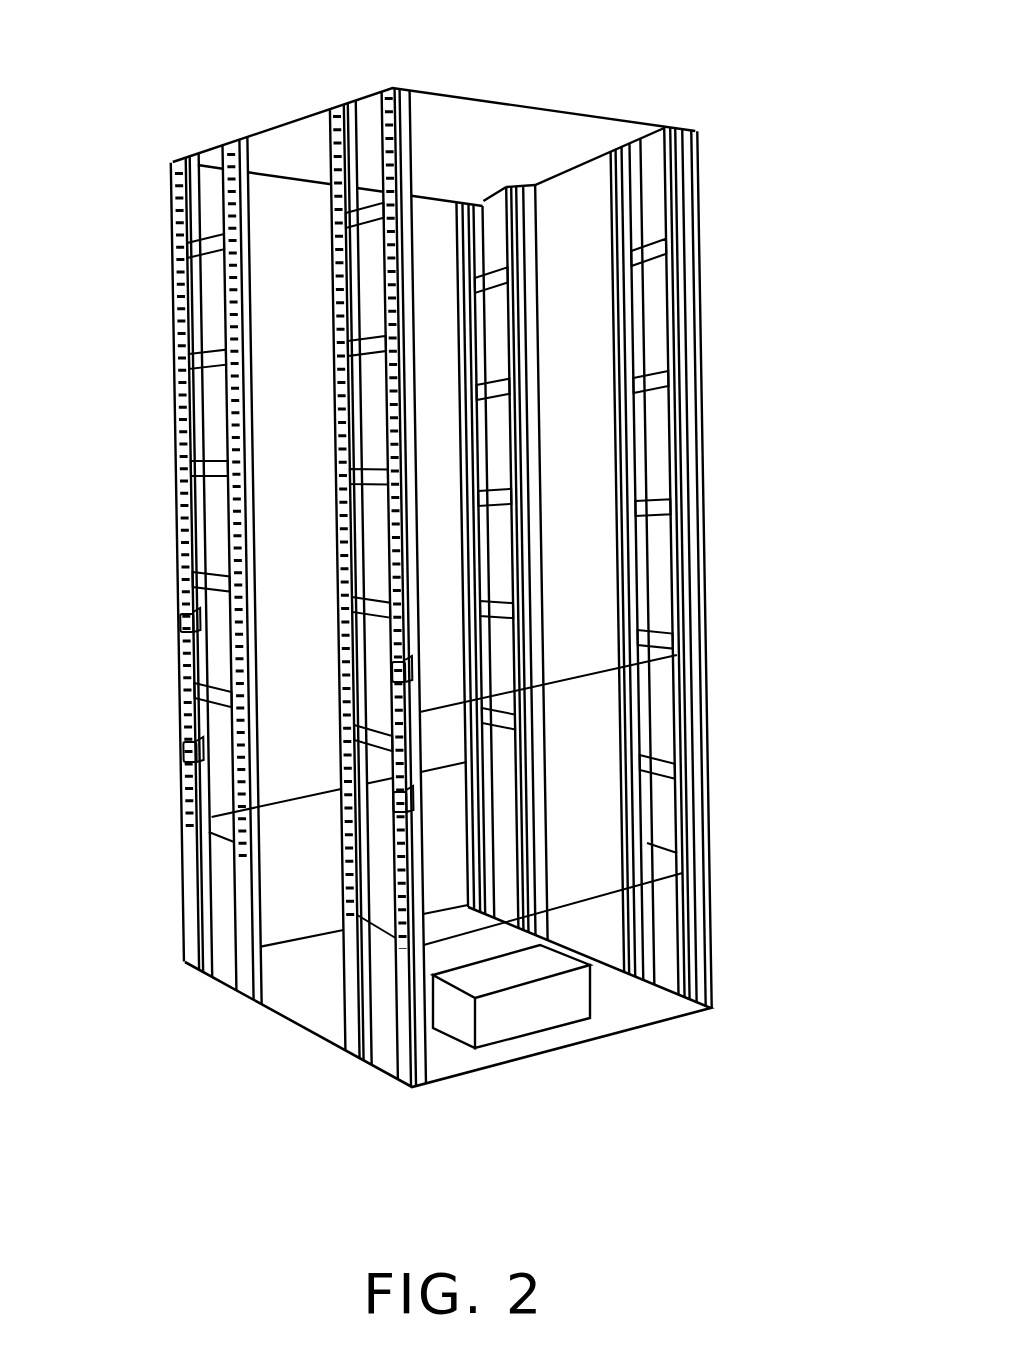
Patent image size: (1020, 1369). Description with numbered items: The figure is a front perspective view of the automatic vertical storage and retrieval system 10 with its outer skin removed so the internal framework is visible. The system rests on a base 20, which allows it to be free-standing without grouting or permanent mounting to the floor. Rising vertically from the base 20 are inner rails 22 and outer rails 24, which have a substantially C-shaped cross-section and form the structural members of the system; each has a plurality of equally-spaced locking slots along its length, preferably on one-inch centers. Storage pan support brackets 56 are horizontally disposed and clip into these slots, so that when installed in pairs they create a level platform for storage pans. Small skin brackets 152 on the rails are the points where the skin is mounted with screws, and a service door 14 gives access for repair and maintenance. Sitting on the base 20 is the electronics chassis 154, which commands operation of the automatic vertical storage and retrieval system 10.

The automatic vertical storage and retrieval system 10 is at (745, 178).
The service door 14 is at (275, 990).
The base 20 is at (665, 930).
The inner rails 22 is at (250, 157).
The outer rails 24 is at (176, 164).
The storage pan support brackets 56 is at (212, 455).
The skin brackets 152 is at (182, 625).
The electronics chassis 154 is at (533, 1033).